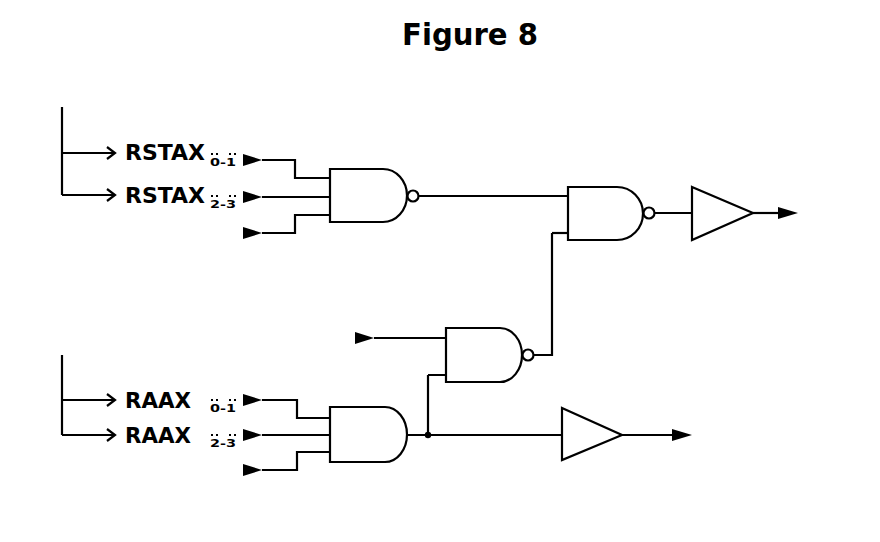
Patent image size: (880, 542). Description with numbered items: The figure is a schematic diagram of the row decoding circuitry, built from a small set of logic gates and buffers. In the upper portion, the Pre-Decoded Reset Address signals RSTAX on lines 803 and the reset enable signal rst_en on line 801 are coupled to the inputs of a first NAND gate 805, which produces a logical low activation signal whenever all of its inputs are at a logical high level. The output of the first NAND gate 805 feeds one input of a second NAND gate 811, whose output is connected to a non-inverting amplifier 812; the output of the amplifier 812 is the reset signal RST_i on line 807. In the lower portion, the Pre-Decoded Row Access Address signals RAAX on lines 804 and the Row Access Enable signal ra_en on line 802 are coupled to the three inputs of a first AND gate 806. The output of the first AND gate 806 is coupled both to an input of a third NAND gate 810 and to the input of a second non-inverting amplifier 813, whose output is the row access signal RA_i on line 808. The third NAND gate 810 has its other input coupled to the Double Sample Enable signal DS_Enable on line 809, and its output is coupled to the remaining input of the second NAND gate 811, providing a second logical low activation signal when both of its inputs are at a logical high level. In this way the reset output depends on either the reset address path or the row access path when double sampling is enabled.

The line carrying reset enable signal rst_en 801 is at (277, 242).
The line carrying row access enable signal ra_en 802 is at (272, 478).
The lines carrying pre-decoded reset address signals RSTAX 803 is at (80, 140).
The lines carrying pre-decoded row access address signals RAAX 804 is at (80, 383).
The first NAND gate 805 is at (348, 162).
The first AND gate 806 is at (393, 470).
The line carrying reset signal RST_i 807 is at (773, 203).
The line carrying row access signal RA_i 808 is at (648, 423).
The line carrying double sample enable signal DS_Enable 809 is at (422, 330).
The third NAND gate 810 is at (478, 320).
The second NAND gate 811 is at (672, 203).
The non-inverting amplifier 812 is at (727, 195).
The non-inverting amplifier 813 is at (597, 415).